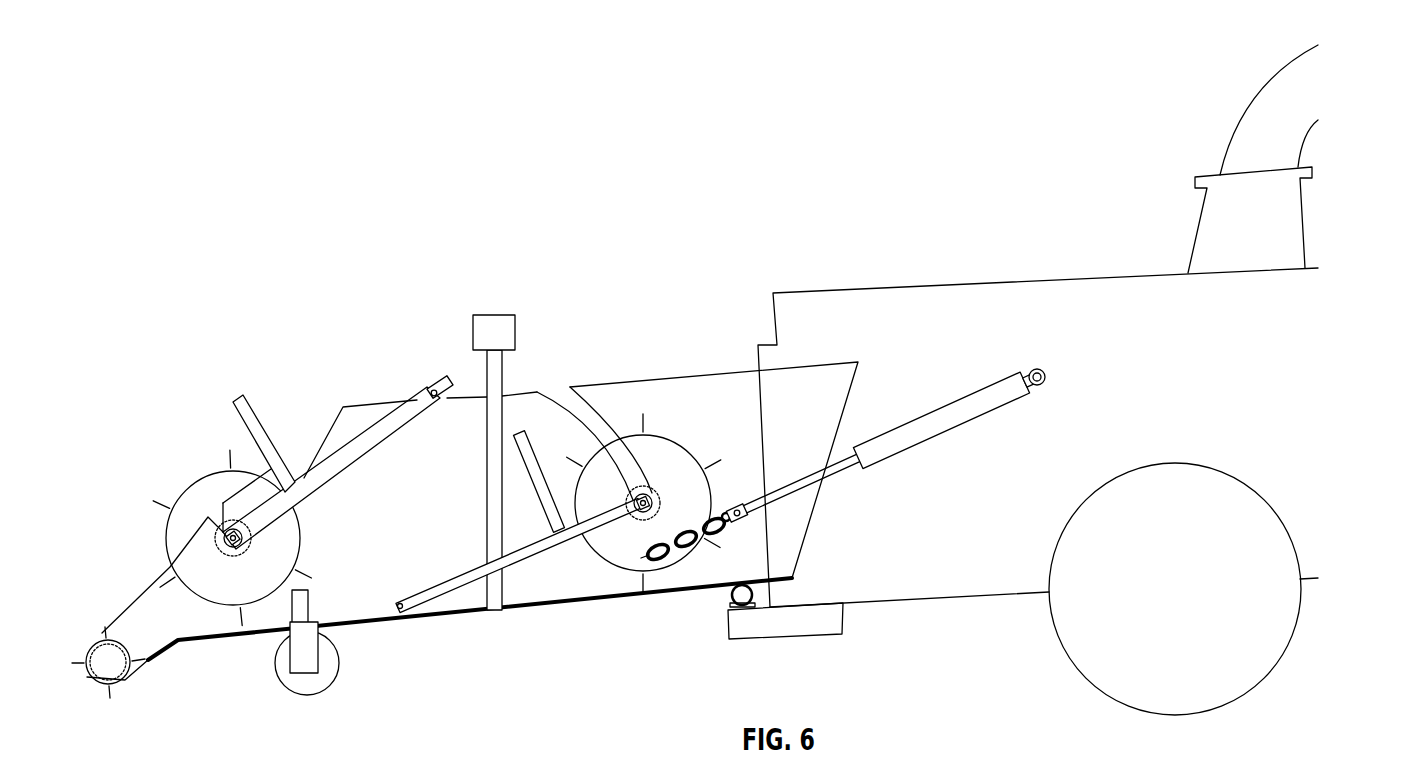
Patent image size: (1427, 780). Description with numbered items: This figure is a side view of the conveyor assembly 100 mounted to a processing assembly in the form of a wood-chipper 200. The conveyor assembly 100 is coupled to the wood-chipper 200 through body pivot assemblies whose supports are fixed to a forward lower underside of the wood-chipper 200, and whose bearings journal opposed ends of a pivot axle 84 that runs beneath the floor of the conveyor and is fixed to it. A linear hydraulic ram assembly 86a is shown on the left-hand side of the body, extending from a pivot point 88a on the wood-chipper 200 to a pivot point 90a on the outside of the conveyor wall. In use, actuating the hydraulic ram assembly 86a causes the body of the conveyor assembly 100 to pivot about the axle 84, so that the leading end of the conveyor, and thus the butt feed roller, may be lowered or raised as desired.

The conveyor assembly 100 is at (473, 242).
The wood-chipper 200 is at (970, 190).
The pivot axle 84 is at (732, 600).
The LHS linear hydraulic ram assembly 86a is at (932, 396).
The pivot point 88a is at (1046, 374).
The pivot point 90a is at (637, 565).